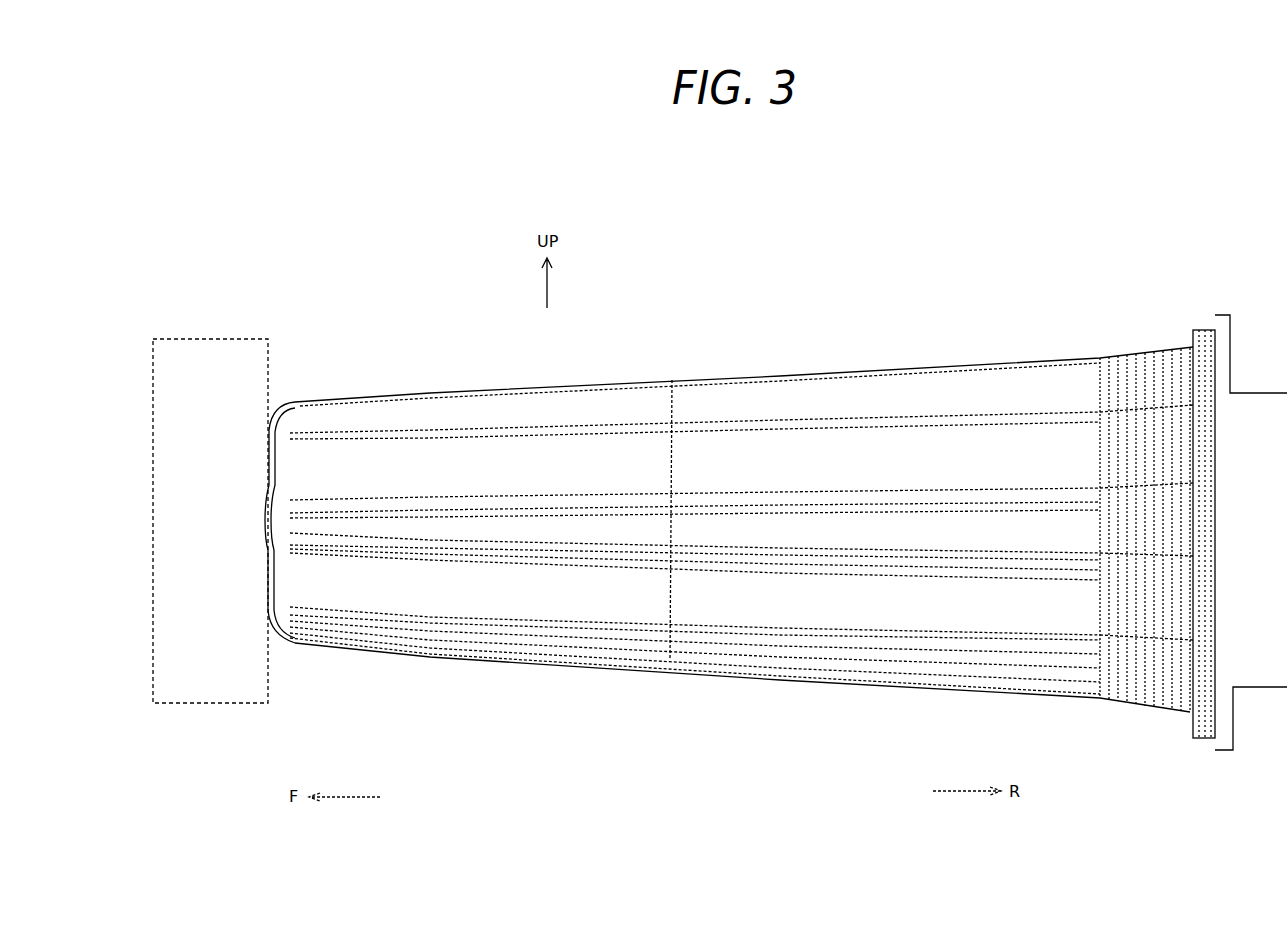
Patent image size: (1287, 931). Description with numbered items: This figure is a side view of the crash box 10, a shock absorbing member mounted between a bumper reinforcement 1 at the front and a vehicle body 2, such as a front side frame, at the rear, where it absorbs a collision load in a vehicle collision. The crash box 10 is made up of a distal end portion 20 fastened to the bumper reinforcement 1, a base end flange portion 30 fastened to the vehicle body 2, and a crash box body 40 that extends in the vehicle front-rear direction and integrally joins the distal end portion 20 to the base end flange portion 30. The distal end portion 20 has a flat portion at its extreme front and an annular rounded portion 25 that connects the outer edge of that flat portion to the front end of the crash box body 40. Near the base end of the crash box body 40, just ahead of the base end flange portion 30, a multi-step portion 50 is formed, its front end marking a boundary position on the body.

The bumper reinforcement 1 is at (240, 339).
The vehicle body 2 is at (1232, 390).
The crash box 10 is at (703, 482).
The distal end portion 20 is at (268, 484).
The rounded portion 25 is at (268, 590).
The base end flange portion 30 is at (1224, 501).
The crash box body 40 is at (817, 376).
The multi-step portion 50 is at (1120, 352).